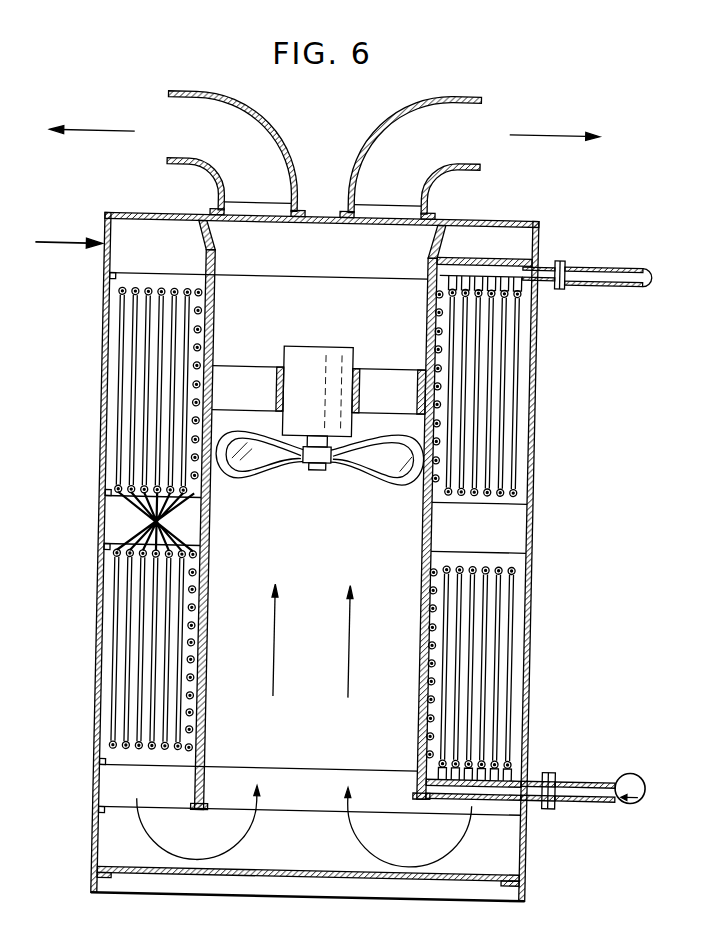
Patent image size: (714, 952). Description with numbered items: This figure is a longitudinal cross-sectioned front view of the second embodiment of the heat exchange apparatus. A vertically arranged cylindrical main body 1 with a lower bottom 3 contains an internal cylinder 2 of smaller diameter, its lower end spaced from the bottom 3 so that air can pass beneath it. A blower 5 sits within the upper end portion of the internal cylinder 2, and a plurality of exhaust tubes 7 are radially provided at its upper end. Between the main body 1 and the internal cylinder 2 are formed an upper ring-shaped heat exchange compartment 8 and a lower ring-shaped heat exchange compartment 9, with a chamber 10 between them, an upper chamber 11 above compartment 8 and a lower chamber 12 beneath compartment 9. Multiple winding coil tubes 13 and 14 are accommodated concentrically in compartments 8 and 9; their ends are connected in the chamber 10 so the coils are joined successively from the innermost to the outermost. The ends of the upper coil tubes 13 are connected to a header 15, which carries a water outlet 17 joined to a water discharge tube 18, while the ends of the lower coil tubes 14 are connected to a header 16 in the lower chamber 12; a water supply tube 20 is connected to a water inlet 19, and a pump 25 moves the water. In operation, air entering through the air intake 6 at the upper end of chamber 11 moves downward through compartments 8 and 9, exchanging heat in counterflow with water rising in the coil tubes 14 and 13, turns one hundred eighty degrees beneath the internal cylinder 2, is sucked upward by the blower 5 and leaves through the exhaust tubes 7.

The main body 1 is at (102, 481).
The internal cylinder 2 is at (208, 521).
The bottom 3 is at (278, 873).
The blower 5 is at (312, 348).
The air intake 6 is at (106, 243).
The exhaust tubes 7 is at (204, 94).
The upper heat exchange compartment 8 is at (113, 348).
The lower heat exchange compartment 9 is at (103, 628).
The chamber 10 is at (118, 525).
The upper chamber 11 is at (139, 240).
The lower chamber 12 is at (108, 783).
The upper coil tubes 13 is at (193, 438).
The lower coil tubes 14 is at (190, 713).
The header 15 is at (493, 257).
The header 16 is at (520, 836).
The water outlet 17 is at (545, 263).
The water discharge tube 18 is at (590, 270).
The water inlet 19 is at (535, 778).
The water supply tube 20 is at (607, 801).
The pump 25 is at (630, 773).